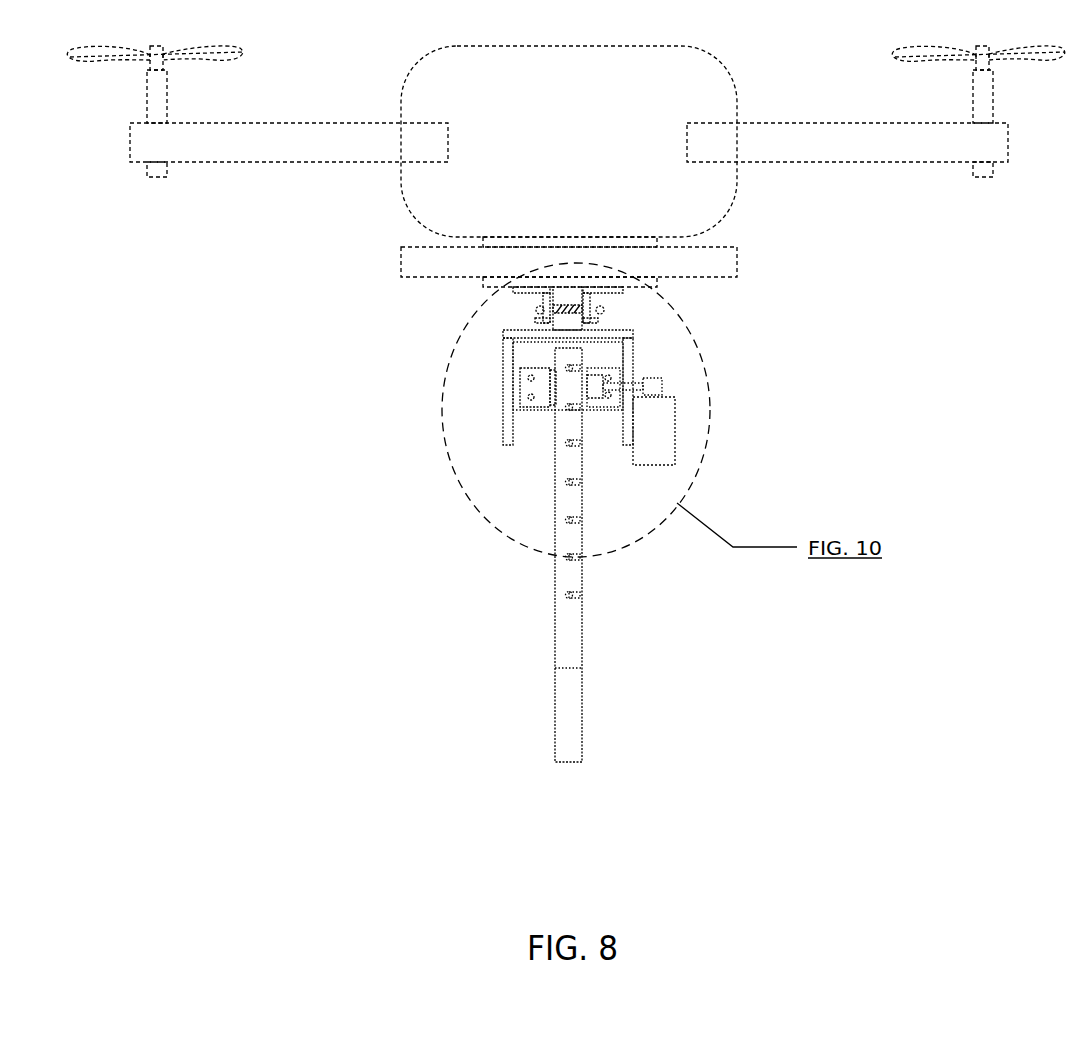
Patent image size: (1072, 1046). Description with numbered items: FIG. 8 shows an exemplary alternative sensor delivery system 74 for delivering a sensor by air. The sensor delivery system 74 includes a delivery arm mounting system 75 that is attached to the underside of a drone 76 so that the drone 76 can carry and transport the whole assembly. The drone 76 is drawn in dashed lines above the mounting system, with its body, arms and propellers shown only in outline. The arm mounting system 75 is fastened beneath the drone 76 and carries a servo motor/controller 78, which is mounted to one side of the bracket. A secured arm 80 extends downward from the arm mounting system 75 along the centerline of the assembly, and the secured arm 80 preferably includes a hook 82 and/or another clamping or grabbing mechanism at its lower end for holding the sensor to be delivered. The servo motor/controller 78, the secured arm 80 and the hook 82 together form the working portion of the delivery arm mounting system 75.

The sensor delivery system 74 is at (330, 452).
The delivery arm mounting system 75 is at (526, 339).
The drone 76 is at (770, 147).
The servo motor/controller 78 is at (663, 432).
The secured arm 80 is at (572, 607).
The hook 82 is at (568, 703).